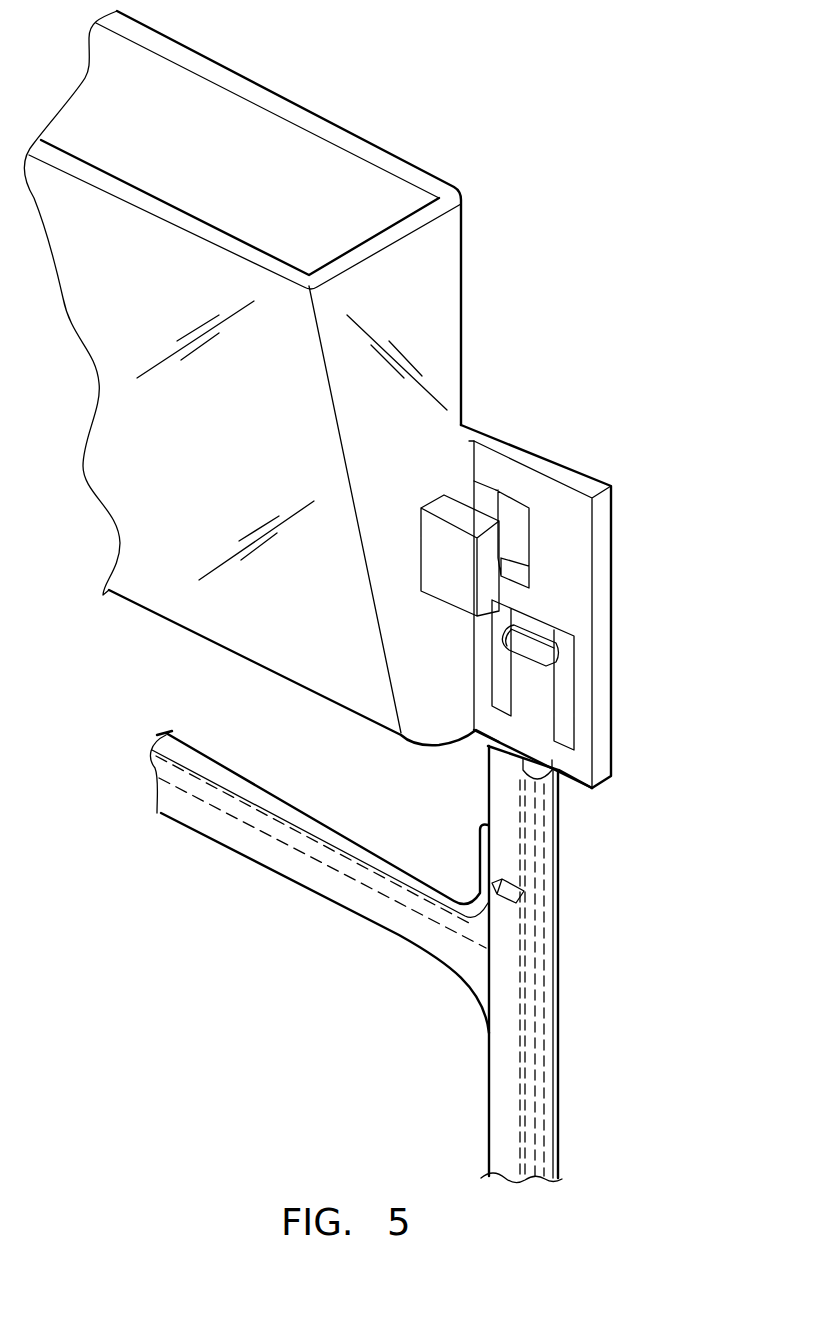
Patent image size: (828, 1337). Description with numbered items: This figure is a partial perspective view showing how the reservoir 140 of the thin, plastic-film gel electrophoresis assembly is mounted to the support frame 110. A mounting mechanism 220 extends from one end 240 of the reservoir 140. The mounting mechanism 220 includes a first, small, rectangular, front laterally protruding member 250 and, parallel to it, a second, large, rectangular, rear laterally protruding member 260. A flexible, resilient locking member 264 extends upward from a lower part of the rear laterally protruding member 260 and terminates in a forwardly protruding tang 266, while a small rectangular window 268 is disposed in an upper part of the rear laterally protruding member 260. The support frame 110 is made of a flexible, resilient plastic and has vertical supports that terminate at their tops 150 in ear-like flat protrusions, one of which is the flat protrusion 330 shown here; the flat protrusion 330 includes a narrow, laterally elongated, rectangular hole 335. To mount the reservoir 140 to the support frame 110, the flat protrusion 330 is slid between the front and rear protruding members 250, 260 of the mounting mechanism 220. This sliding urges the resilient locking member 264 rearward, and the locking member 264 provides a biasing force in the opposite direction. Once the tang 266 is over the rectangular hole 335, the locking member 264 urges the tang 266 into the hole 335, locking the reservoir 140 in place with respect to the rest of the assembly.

The support frame 110 is at (580, 1068).
The reservoir 140 is at (470, 257).
The tops of the vertical supports 150 is at (575, 773).
The mounting mechanism 220 is at (516, 580).
The end of the reservoir 240 is at (438, 368).
The front laterally protruding member 250 is at (435, 573).
The rear laterally protruding member 260 is at (602, 535).
The locking member 264 is at (537, 702).
The tang 266 is at (542, 658).
The window 268 is at (508, 510).
The flat protrusion 330 is at (487, 825).
The rectangular hole 335 is at (505, 888).